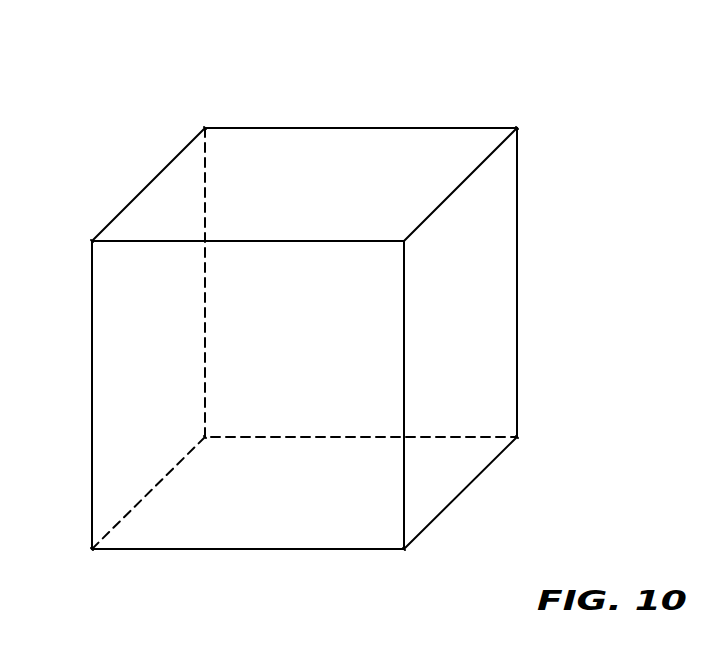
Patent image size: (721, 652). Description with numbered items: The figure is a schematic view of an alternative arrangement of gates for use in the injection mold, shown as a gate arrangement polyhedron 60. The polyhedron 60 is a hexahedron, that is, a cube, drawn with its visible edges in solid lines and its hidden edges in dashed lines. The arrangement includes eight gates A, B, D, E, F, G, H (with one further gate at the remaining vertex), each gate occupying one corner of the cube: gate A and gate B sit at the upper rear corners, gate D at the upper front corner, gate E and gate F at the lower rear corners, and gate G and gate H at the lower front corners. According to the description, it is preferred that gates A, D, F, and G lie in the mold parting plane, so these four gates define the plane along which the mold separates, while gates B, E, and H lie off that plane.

The gate arrangement polyhedron 60 is at (604, 81).
The gate A is at (205, 128).
The gate B is at (517, 128).
The gate D is at (92, 241).
The gate E is at (205, 437).
The gate F is at (517, 437).
The gate G is at (404, 549).
The gate H is at (92, 549).